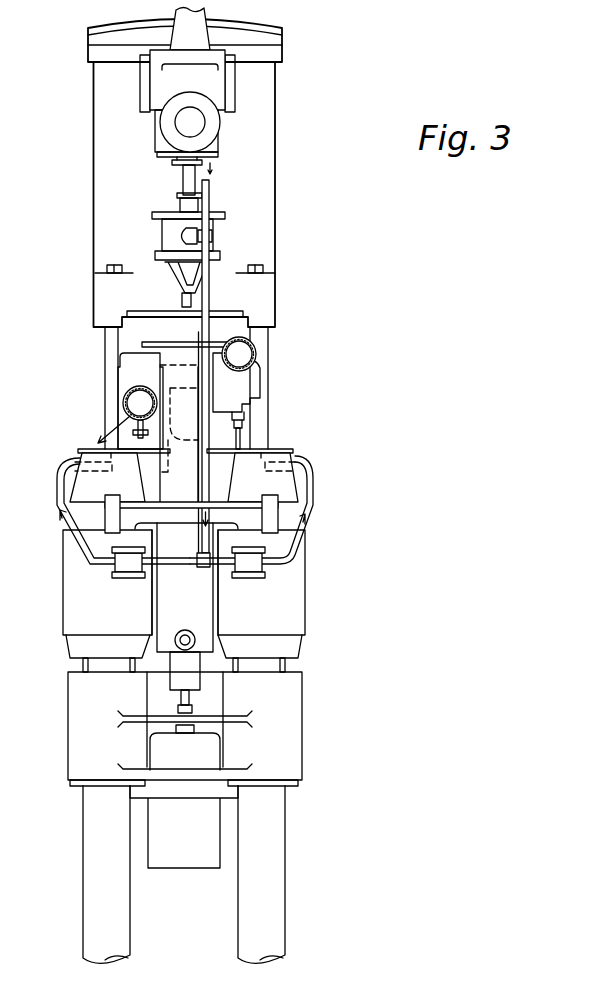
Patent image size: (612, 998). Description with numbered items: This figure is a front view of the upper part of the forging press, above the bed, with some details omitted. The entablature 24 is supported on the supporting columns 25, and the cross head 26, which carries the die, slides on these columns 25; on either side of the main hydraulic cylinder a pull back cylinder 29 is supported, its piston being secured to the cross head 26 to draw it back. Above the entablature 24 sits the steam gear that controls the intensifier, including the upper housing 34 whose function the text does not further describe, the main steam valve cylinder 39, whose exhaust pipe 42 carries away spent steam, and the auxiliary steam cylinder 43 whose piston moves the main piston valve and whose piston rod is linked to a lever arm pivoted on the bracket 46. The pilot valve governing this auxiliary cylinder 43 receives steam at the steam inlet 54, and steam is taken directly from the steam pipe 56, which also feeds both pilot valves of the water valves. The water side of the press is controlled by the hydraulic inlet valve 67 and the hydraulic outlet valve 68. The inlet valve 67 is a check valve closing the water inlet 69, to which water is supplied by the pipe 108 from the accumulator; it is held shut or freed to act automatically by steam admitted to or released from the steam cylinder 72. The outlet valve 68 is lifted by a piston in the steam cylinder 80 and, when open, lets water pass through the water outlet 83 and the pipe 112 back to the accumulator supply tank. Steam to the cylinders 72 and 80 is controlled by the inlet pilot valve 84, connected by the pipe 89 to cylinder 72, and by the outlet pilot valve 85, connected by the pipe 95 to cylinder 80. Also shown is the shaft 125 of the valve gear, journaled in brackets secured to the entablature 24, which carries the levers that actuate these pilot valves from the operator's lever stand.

The entablature 24 is at (184, 601).
The supporting columns 25 is at (184, 874).
The cross head 26 is at (185, 770).
The pull back cylinder 29 is at (185, 539).
The upper housing 34 is at (185, 229).
The main steam valve cylinder 39 is at (187, 103).
The exhaust pipe 42 is at (190, 122).
The auxiliary steam cylinder 43 is at (162, 227).
The bracket 46 is at (180, 270).
The steam inlet 54 is at (182, 236).
The steam pipe 56 is at (210, 188).
The hydraulic inlet valve 67 is at (238, 388).
The hydraulic outlet valve 68 is at (125, 380).
The water inlet 69 is at (243, 361).
The steam cylinder 72 is at (250, 450).
The steam cylinder 80 is at (100, 449).
The water outlet 83 is at (128, 401).
The inlet pilot valve 84 is at (248, 562).
The outlet pilot valve 85 is at (128, 562).
The pipe 89 is at (314, 508).
The pipe 95 is at (60, 506).
The pipe 108 is at (244, 351).
The pipe 112 is at (124, 407).
The shaft 125 is at (191, 514).